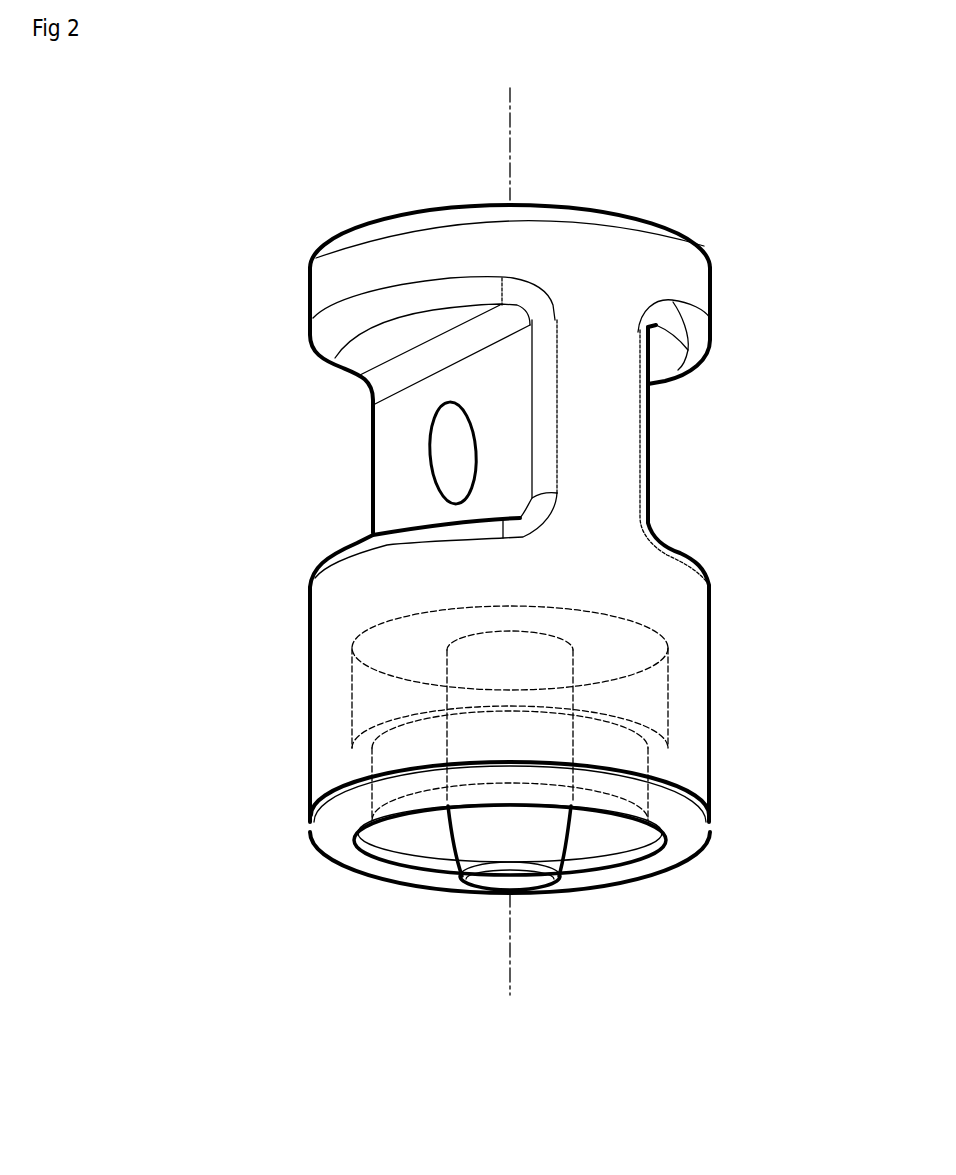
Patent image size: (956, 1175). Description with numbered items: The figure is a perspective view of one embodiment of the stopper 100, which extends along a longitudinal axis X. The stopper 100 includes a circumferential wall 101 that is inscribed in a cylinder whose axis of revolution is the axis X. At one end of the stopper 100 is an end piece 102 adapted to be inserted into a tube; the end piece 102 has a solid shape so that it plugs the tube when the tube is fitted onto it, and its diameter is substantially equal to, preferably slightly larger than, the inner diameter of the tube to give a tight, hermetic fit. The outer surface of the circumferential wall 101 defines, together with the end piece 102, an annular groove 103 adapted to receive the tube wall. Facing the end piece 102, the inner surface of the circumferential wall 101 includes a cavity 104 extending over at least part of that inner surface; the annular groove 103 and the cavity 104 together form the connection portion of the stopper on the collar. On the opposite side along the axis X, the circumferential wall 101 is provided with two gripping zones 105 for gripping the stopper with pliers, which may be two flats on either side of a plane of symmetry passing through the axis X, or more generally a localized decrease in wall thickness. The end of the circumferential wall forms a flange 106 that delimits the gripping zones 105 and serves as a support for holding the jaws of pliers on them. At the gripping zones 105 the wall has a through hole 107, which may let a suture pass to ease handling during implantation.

The stopper 100 is at (205, 758).
The circumferential wall 101 is at (700, 668).
The end piece 102 is at (552, 840).
The annular groove 103 is at (418, 836).
The cavity 104 is at (355, 690).
The gripping zones 105 is at (518, 420).
The flange 106 is at (312, 295).
The through hole 107 is at (455, 453).
The longitudinal axis X is at (510, 975).